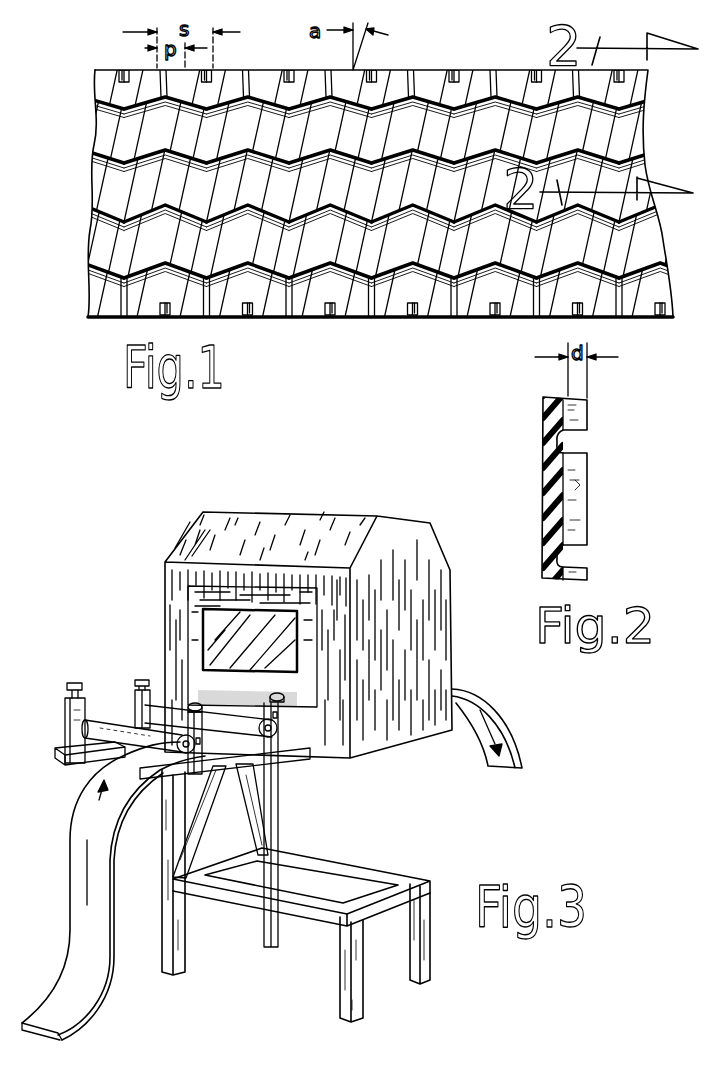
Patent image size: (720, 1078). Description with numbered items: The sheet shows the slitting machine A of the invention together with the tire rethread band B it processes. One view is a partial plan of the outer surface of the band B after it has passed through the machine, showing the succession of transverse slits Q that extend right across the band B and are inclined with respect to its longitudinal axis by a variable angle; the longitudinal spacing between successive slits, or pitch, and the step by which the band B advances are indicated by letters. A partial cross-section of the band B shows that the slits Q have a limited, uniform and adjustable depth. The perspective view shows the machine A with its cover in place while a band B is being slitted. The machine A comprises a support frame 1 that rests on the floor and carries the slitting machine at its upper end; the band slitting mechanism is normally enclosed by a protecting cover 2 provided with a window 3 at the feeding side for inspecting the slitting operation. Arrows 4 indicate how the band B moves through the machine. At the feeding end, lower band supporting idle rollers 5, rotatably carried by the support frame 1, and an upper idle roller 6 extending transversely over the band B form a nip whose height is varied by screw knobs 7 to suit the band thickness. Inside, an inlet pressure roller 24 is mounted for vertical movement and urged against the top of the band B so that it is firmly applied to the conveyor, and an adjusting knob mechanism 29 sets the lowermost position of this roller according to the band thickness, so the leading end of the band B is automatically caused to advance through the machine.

In FIG. 3, the support frame 1 is at (228, 893).
In FIG. 3, the protecting cover 2 is at (314, 635).
In FIG. 3, the window 3 is at (205, 652).
In FIG. 3, the arrows 4 is at (72, 844).
In FIG. 3, the lower band supporting idle rollers 5 is at (85, 766).
In FIG. 3, the upper idle roller 6 is at (112, 722).
In FIG. 3, the screw knobs 7 is at (75, 683).
In FIG. 3, the inlet pressure roller 24 is at (253, 757).
In FIG. 3, the adjusting knob mechanism 29 is at (143, 678).
In FIG. 3, the machine A is at (388, 777).
In FIG. 1, the tire rethread band B is at (388, 318).
In FIG. 2, the tire rethread band B is at (544, 463).
In FIG. 3, the tire rethread band B is at (505, 723).
In FIG. 1, the transverse slits Q is at (650, 262).
In FIG. 2, the transverse slits Q is at (580, 486).